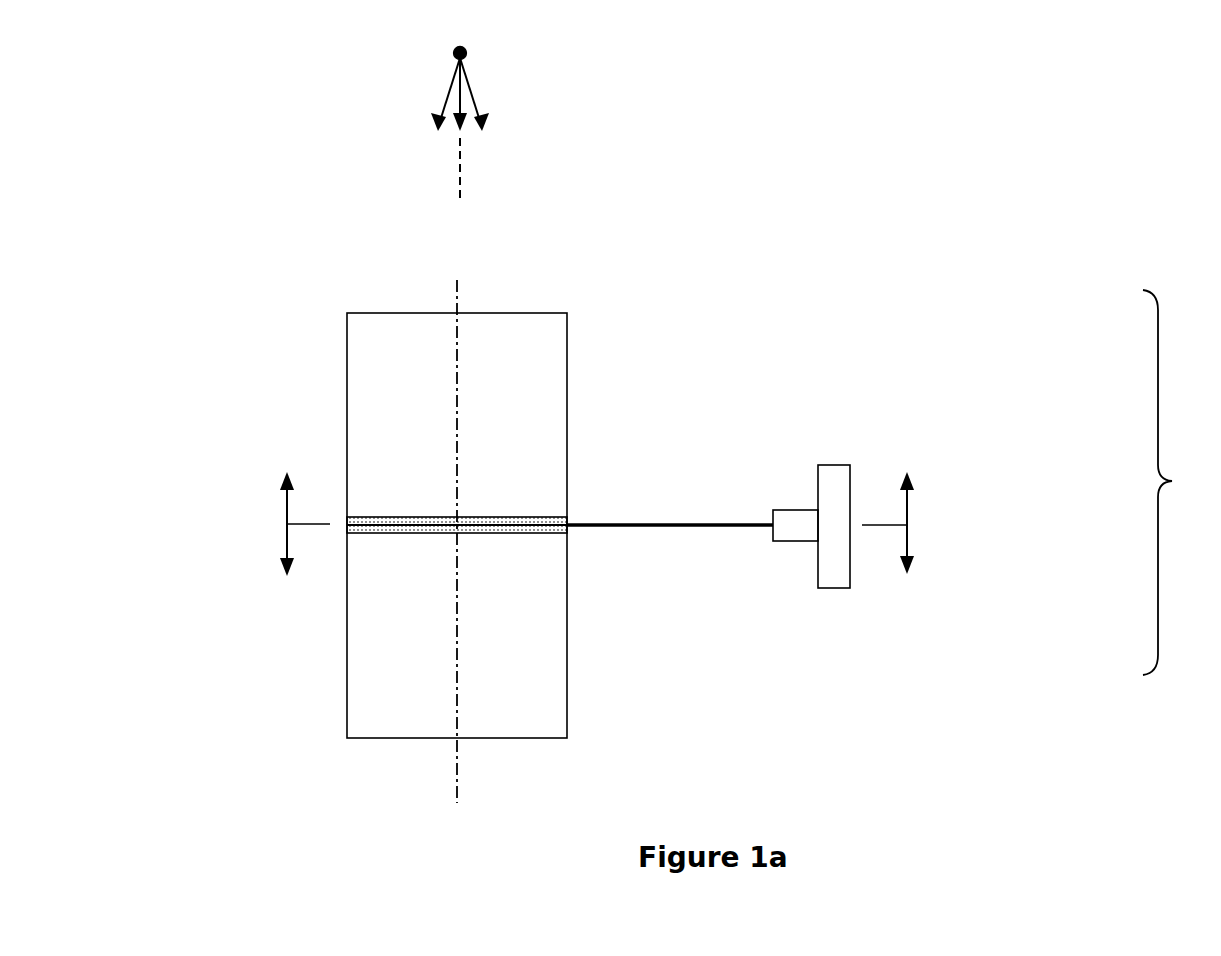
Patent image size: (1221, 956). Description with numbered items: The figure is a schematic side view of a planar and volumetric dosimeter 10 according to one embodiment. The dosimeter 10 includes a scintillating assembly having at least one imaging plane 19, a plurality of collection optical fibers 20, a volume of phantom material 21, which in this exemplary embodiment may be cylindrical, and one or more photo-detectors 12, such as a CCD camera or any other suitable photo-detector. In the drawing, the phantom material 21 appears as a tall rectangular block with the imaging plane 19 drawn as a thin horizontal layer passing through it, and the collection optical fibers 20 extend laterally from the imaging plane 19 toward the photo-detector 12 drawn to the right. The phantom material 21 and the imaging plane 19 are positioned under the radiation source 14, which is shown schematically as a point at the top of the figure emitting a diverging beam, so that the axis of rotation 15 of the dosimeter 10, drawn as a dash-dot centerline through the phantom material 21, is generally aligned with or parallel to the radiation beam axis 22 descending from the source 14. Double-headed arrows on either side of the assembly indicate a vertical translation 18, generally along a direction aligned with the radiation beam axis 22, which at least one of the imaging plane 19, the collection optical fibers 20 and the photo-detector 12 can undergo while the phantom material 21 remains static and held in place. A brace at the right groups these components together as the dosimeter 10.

The planar and volumetric dosimeter 10 is at (1176, 482).
The photo-detector 12 is at (843, 473).
The radiation source 14 is at (483, 53).
The axis of rotation 15 is at (457, 295).
The vertical translation 18 is at (287, 505).
The imaging plane 19 is at (552, 517).
The collection optical fibers 20 is at (647, 527).
The phantom material 21 is at (377, 357).
The radiation beam axis 22 is at (472, 177).